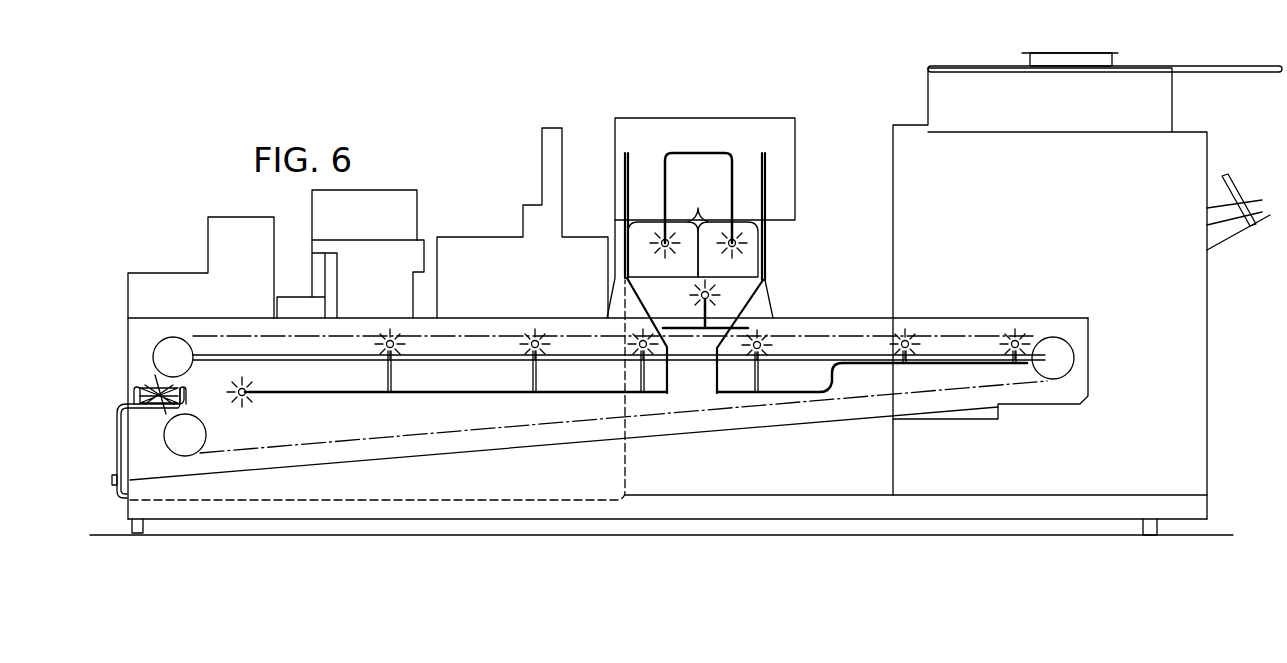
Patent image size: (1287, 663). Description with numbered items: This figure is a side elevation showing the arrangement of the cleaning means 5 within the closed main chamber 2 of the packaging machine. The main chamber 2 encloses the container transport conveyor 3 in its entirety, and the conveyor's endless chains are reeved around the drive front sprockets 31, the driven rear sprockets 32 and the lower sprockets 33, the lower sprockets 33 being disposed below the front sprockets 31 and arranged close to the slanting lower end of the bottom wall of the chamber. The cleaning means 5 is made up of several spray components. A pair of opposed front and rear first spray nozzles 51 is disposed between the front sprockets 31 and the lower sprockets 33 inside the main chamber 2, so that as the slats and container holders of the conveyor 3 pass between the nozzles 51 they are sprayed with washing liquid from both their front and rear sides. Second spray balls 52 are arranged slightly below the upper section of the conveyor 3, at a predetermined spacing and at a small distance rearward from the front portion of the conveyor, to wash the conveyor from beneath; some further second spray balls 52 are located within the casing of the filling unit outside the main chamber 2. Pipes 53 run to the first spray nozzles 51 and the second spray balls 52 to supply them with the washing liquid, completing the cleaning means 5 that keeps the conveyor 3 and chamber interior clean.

The main chamber 2 is at (127, 338).
The container transport conveyor 3 is at (731, 408).
The cleaning means 5 is at (766, 273).
The drive front sprockets 31 is at (160, 352).
The driven rear sprockets 32 is at (1060, 355).
The lower sprockets 33 is at (172, 437).
The first spray nozzles 51 is at (134, 395).
The second spray balls 52 is at (243, 397).
The pipes 53 is at (117, 458).